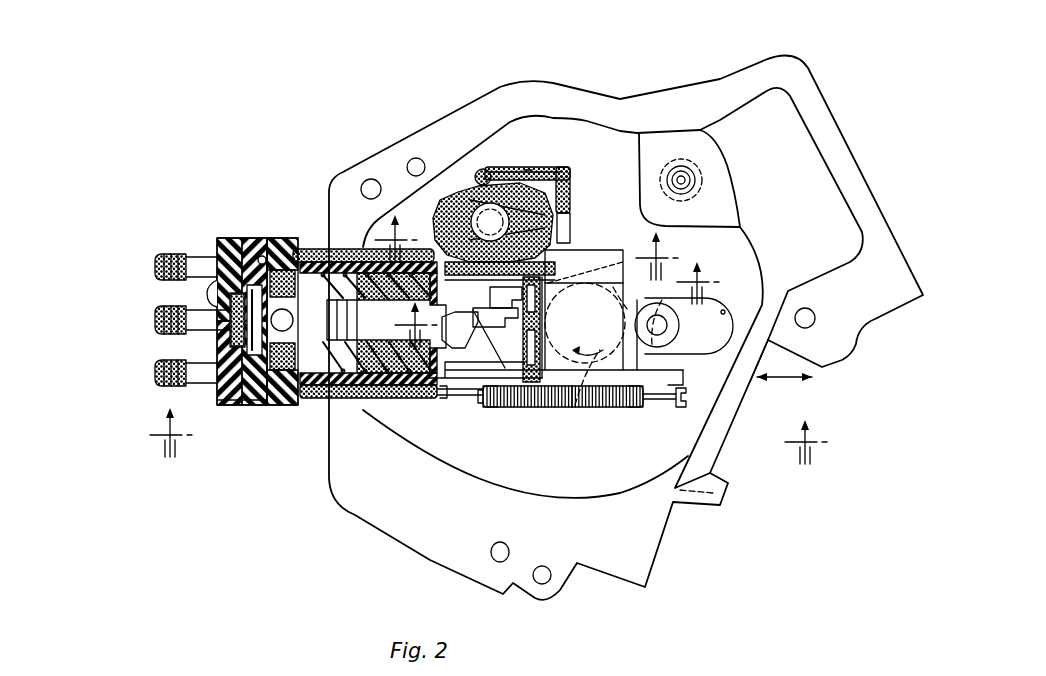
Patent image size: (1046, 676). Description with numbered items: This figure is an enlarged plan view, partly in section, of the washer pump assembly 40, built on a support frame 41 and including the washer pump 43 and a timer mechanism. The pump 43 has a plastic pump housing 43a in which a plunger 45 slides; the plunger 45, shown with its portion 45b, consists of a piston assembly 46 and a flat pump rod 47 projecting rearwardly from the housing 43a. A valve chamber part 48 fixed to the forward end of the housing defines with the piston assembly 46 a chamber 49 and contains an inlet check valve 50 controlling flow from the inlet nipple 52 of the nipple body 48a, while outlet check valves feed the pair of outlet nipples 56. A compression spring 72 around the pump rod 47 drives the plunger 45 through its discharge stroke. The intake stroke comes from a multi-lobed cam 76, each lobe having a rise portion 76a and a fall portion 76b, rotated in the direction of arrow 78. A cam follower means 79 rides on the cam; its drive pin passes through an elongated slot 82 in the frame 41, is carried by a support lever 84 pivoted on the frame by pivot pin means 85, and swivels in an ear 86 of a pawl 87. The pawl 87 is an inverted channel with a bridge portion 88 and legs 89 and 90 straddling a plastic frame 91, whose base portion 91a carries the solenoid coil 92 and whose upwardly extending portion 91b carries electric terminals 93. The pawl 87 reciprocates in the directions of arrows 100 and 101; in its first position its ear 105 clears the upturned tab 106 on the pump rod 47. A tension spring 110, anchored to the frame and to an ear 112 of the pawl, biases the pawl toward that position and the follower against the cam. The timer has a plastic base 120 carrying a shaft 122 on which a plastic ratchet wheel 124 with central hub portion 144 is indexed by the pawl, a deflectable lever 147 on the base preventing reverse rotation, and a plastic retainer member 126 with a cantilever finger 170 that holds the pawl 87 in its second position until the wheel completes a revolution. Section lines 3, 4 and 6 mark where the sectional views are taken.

The washer pump assembly 40 is at (599, 122).
The support frame 41 is at (630, 130).
The washer pump 43 is at (280, 242).
The pump housing 43a is at (320, 257).
The plunger 45 is at (273, 380).
The piston end 45b is at (423, 362).
The piston assembly 46 is at (300, 398).
The pump rod 47 is at (362, 363).
The valve chamber part 48 is at (262, 242).
The nipple body 48a is at (227, 407).
The chamber 49 is at (262, 257).
The inlet check valve 50 is at (290, 327).
The inlet nipple 52 is at (155, 325).
The outlet nipples 56 is at (155, 265).
The compression spring 72 is at (393, 362).
The multi-lobed cam 76 is at (575, 405).
The rise portion 76a is at (662, 300).
The fall portion 76b is at (613, 287).
The arrow 78 is at (585, 323).
The cam follower means 79 is at (679, 320).
The elongated slot 82 is at (725, 310).
The support lever 84 is at (700, 197).
The pivot pin means 85 is at (697, 170).
The ear 86 is at (670, 360).
The pawl 87 is at (495, 392).
The bridge portion 88 is at (580, 280).
The leg 89 is at (486, 385).
The leg 90 is at (438, 258).
The plastic frame 91 is at (549, 398).
The base portion 91a is at (634, 398).
The upwardly extending portion 91b is at (518, 400).
The solenoid coil 92 is at (574, 398).
The electric terminals 93 is at (541, 335).
The arrow 100 is at (758, 380).
The arrow 101 is at (808, 378).
The ear 105 is at (478, 388).
The upturned tab 106 is at (483, 322).
The tension spring 110 is at (612, 400).
The ear 112 is at (679, 407).
The plastic base 120 is at (575, 212).
The shaft 122 is at (465, 190).
The ratchet wheel 124 is at (485, 168).
The retainer means 126 is at (535, 188).
The hub portion 144 is at (528, 167).
The deflectable lever 147 is at (511, 167).
The cantilever finger 170 is at (455, 210).
The section line 3- 3 is at (478, 442).
The section line 4- 4 is at (548, 304).
The section line 6- 6 is at (510, 246).